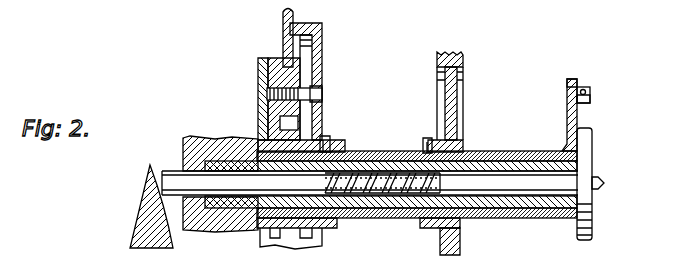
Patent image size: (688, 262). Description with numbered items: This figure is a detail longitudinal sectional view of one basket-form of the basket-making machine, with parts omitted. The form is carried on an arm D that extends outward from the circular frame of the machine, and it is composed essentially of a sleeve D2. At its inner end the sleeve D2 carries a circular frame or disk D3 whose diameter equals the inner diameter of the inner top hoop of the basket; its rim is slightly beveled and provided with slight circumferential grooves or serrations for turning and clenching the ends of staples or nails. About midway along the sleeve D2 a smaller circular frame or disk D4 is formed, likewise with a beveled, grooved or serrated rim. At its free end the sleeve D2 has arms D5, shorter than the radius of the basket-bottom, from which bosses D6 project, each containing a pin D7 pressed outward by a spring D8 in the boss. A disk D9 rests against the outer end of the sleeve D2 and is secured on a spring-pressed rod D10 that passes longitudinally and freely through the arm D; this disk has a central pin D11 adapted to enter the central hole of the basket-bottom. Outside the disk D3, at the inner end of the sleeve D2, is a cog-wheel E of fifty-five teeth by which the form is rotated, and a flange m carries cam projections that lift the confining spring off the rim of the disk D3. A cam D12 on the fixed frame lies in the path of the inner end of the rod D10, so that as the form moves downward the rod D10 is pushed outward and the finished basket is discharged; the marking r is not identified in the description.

The arm D is at (486, 151).
The sleeve D2 is at (391, 167).
The circular frame or disk D3 is at (322, 30).
The circular frame or disk D4 is at (463, 100).
The arms D5 is at (553, 115).
The bosses D6 is at (584, 67).
The pin D7 is at (590, 92).
The spring D8 is at (588, 100).
The disk D9 is at (600, 184).
The spring-pressed rod D10 is at (418, 208).
The central pin D11 is at (616, 180).
The cam D12 is at (151, 190).
The cog-wheel E is at (220, 155).
The flange m is at (274, 37).
The shaft r is at (343, 225).